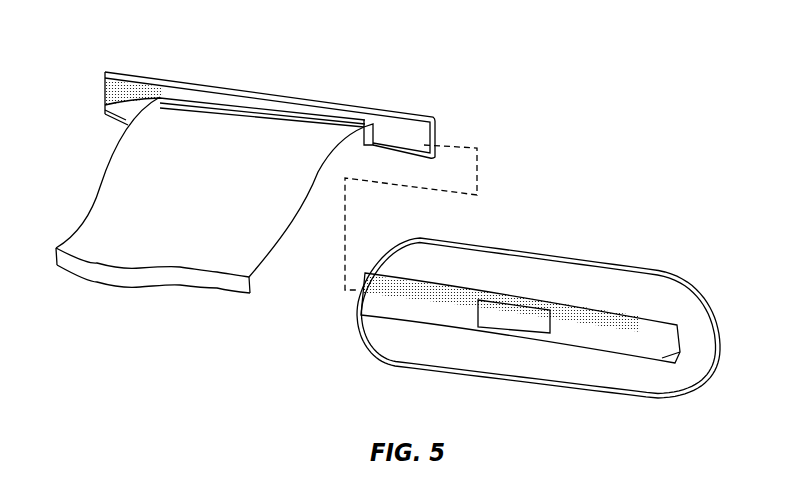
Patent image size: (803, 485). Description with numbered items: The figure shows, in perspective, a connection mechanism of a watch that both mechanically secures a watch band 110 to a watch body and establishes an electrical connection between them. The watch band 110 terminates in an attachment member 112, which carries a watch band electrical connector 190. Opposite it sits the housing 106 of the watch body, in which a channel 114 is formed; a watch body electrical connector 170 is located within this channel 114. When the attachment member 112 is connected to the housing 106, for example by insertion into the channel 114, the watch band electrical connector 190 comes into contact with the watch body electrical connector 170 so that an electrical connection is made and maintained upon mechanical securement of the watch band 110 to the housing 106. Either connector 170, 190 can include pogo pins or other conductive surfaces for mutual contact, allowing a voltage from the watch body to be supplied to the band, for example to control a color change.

The housing 106 is at (642, 285).
The watch band 110 is at (110, 180).
The attachment member 112 is at (105, 108).
The channel 114 is at (675, 350).
The watch body electrical connector 170 is at (510, 312).
The watch band electrical connector 190 is at (272, 92).